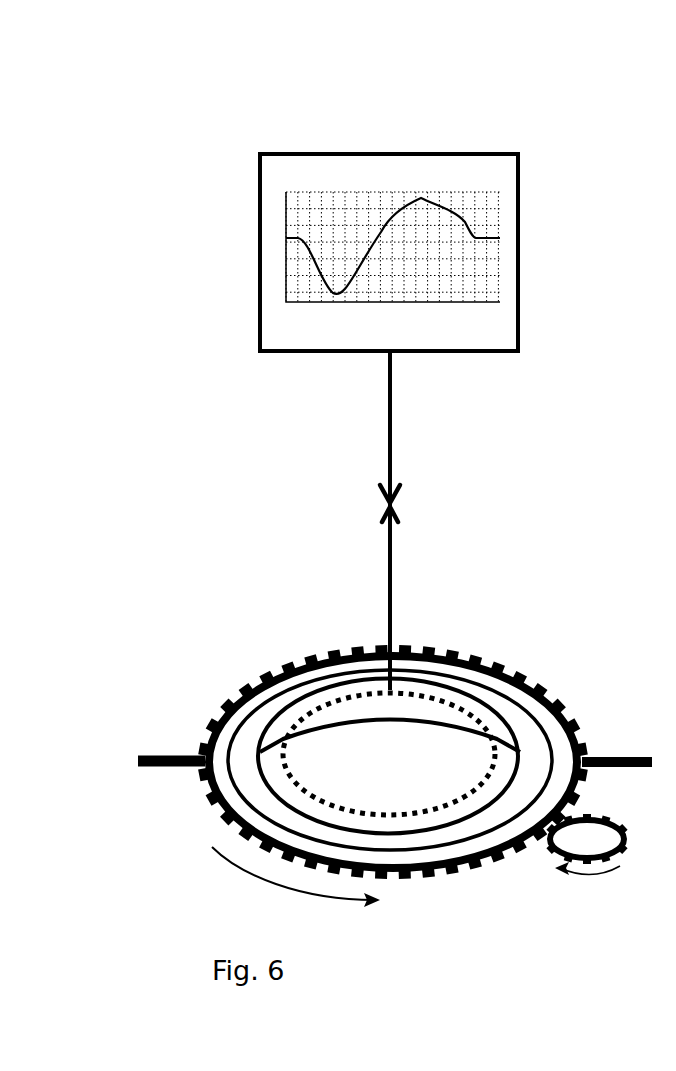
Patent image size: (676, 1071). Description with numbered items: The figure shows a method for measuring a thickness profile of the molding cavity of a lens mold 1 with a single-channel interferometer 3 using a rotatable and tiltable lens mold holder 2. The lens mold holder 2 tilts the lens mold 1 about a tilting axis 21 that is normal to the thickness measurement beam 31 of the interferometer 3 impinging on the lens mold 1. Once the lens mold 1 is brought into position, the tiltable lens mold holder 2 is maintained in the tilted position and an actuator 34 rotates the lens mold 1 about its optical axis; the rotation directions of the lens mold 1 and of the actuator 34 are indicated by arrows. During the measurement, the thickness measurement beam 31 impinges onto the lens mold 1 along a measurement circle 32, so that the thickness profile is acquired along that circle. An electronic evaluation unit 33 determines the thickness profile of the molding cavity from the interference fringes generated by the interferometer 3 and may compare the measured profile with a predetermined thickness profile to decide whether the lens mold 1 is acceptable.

The lens mold 1 is at (392, 782).
The lens mold holder 2 is at (197, 737).
The tilting axis 21 is at (138, 763).
The interferometer 3 is at (312, 353).
The thickness measurement beam 31 is at (392, 550).
The measurement circle 32 is at (468, 713).
The electronic evaluation unit 33 is at (480, 210).
The actuator 34 is at (598, 840).